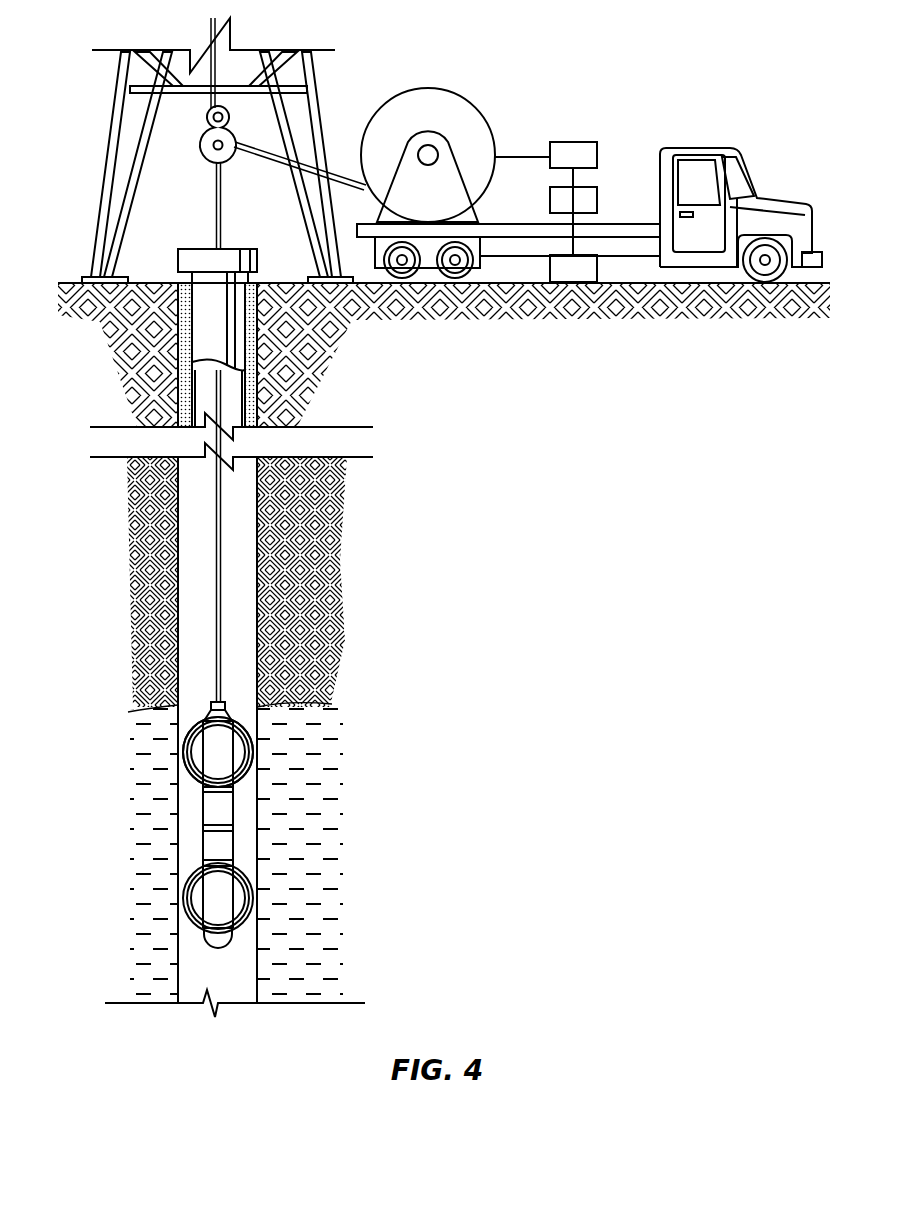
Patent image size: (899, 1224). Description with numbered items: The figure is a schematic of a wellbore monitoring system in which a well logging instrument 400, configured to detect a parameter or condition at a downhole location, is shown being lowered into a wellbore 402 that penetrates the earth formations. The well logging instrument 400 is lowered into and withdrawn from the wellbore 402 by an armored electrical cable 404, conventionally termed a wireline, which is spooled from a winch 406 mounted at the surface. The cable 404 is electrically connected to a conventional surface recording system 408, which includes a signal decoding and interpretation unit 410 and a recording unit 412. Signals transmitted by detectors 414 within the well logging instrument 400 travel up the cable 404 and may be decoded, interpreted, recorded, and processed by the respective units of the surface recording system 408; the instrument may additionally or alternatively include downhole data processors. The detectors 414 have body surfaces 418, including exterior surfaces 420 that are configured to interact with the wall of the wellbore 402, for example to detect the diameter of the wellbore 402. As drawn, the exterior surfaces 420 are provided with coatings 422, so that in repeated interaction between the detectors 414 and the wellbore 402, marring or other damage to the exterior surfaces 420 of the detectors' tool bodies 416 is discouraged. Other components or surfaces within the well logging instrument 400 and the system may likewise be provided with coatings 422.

The well logging instrument 400 is at (243, 814).
The wellbore 402 is at (192, 968).
The armored electrical cable 404 is at (214, 226).
The winch 406 is at (428, 88).
The surface recording system 408 is at (559, 78).
The signal decoding and interpretation unit 410 is at (582, 142).
The recording unit 412 is at (593, 187).
The detectors 414 is at (164, 856).
The tool bodies 416 is at (190, 733).
The body surfaces 418 is at (254, 743).
The exterior surfaces 420 is at (186, 757).
The coatings 422 is at (187, 741).